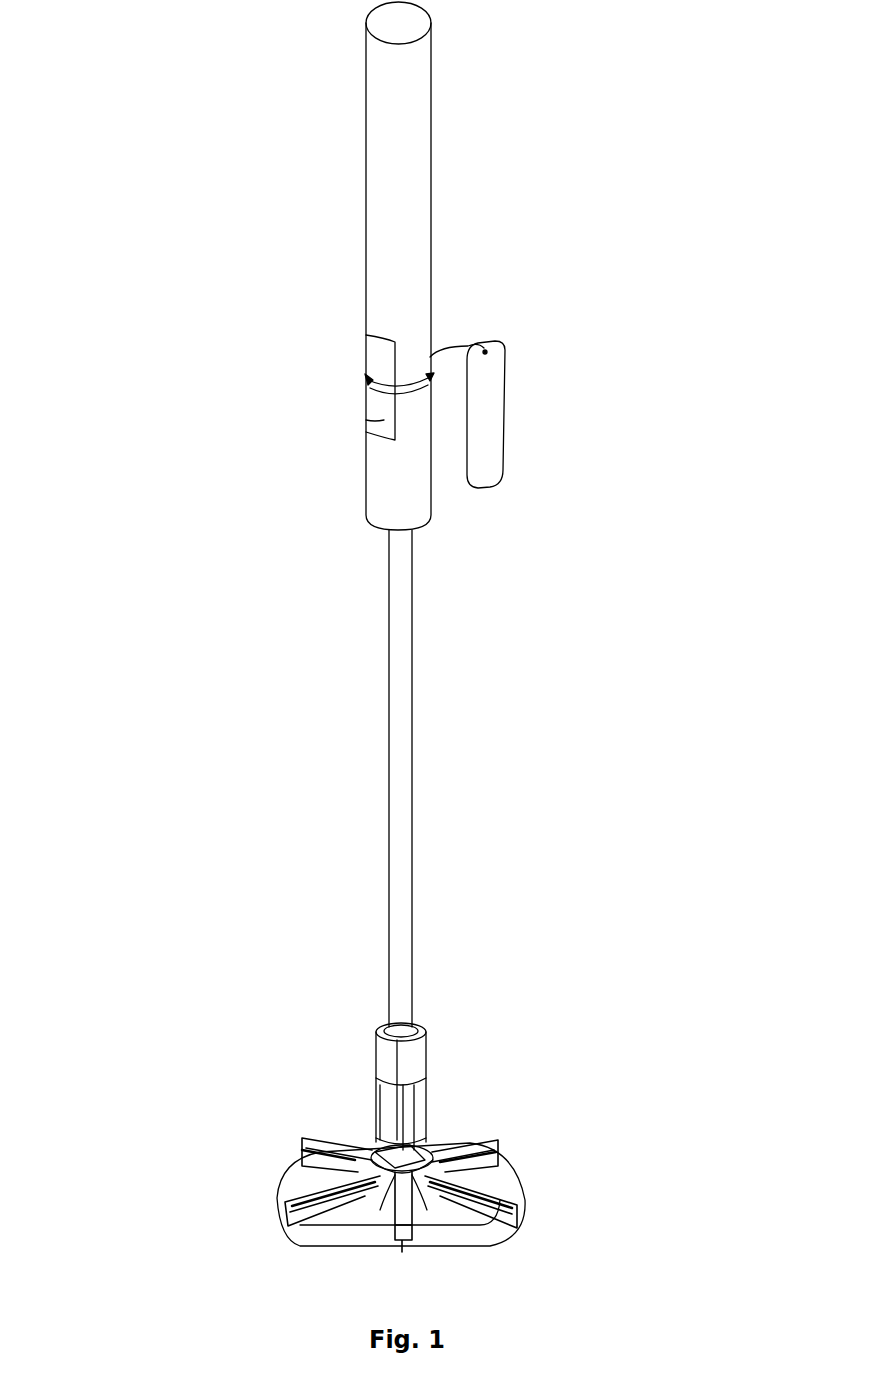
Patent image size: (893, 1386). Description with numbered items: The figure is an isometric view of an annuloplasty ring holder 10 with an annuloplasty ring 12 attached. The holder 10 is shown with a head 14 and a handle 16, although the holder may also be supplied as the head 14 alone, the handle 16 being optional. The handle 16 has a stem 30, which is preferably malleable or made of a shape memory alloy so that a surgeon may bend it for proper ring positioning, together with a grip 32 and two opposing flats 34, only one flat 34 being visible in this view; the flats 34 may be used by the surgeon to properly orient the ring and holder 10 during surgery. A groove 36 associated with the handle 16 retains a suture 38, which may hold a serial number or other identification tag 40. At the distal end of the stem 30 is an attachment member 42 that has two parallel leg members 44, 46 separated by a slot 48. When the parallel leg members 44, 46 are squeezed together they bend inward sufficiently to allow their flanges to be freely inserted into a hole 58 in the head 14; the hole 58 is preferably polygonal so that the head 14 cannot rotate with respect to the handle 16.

The annuloplasty ring holder 10 is at (286, 672).
The annuloplasty ring 12 is at (435, 1233).
The head 14 is at (306, 1185).
The handle 16 is at (580, 291).
The stem 30 is at (395, 780).
The grip 32 is at (388, 277).
The flat 34 is at (382, 418).
The groove 36 is at (375, 378).
The suture 38 is at (455, 345).
The identification tag 40 is at (482, 458).
The attachment member 42 is at (442, 1039).
The parallel leg member 44 is at (428, 1102).
The parallel leg member 46 is at (385, 1103).
The slot 48 is at (410, 1115).
The hole 58 is at (377, 1136).